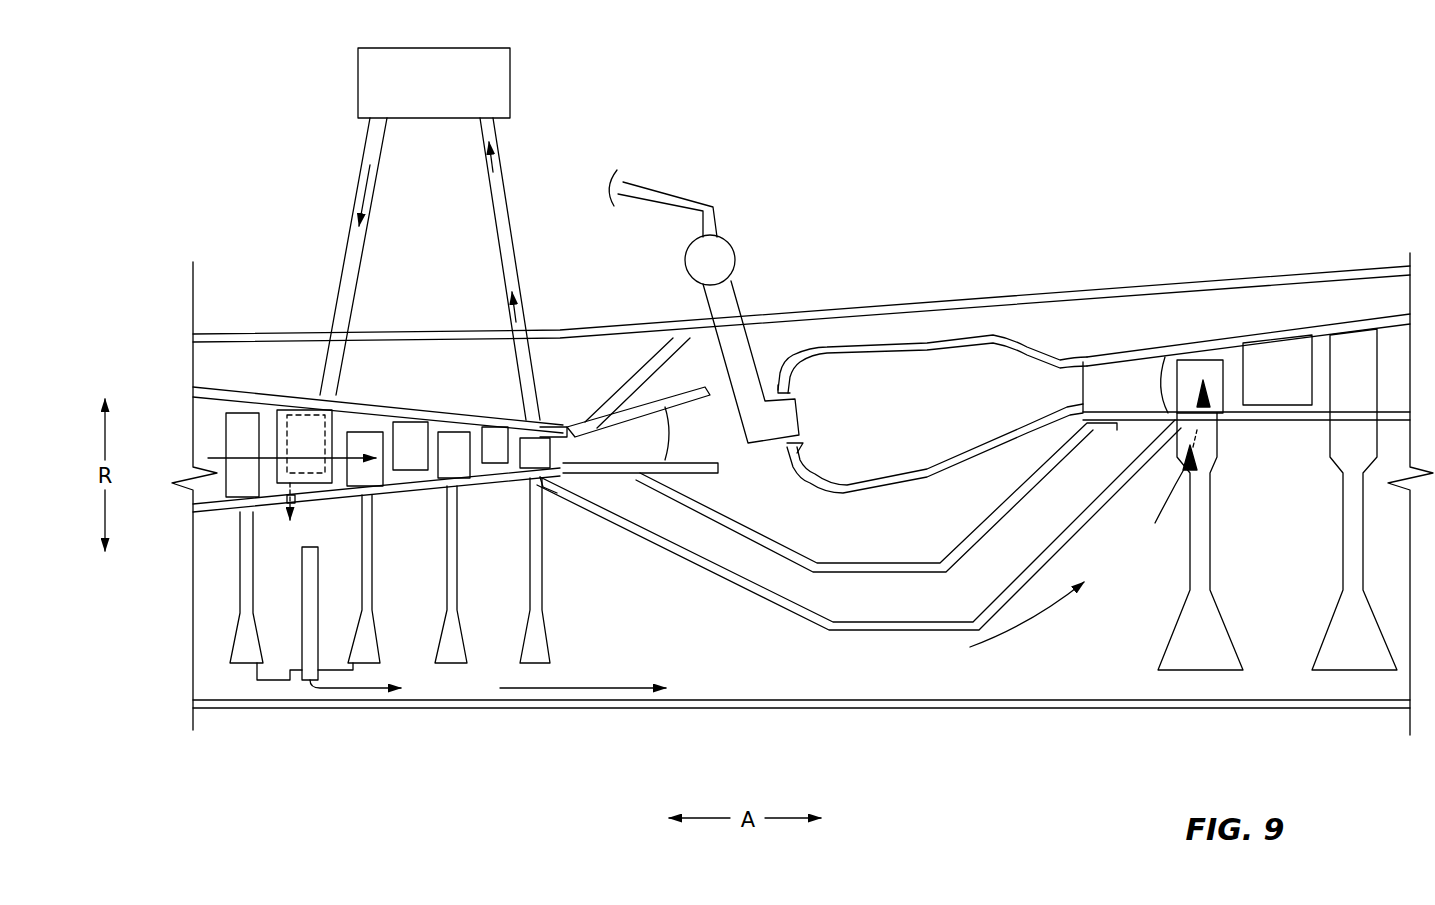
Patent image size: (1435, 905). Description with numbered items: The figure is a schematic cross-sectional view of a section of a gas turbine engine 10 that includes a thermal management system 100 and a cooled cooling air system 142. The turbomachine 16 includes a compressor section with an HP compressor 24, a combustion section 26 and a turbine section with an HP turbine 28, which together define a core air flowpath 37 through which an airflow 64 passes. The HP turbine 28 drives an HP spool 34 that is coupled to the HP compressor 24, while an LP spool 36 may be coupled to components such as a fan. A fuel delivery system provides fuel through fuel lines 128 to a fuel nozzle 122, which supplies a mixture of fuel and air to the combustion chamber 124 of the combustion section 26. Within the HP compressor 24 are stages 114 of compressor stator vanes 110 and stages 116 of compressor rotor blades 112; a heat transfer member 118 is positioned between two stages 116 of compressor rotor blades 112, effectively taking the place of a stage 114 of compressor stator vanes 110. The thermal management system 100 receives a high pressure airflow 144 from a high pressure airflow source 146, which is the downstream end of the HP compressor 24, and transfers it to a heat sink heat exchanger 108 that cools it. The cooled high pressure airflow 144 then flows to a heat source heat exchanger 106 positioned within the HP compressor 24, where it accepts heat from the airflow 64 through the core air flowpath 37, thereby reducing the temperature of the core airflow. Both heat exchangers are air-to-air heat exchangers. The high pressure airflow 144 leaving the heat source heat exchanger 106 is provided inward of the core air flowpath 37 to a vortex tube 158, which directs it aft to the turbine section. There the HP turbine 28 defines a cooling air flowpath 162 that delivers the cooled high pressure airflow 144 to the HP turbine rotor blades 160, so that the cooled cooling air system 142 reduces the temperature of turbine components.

The thermal management system 100 is at (268, 156).
The gas turbine engine 10 is at (1124, 154).
The turbomachine 16 is at (1410, 494).
The LP spool 36 is at (1033, 710).
The combustion section 26 is at (1013, 322).
The HP turbine 28 is at (1289, 308).
The stage of compressor stator vanes 114 is at (401, 400).
The compressor rotor blade 112 is at (248, 405).
The core air flowpath 37 is at (210, 433).
The stage of compressor rotor blades 116 is at (235, 423).
The heat transfer member 118 is at (270, 423).
The heat source heat exchanger 106 is at (320, 481).
The compressor stator vane 110 is at (409, 443).
The HP compressor 24 is at (366, 382).
The airflow 64 is at (247, 462).
The vortex tube 158 is at (306, 597).
The high pressure airflow source 146 is at (551, 420).
The heat sink heat exchanger 108 is at (357, 92).
The high pressure airflow 144 is at (343, 303).
The cooled cooling air system 142 is at (580, 100).
The fuel line 128 is at (673, 190).
The fuel nozzle 122 is at (748, 336).
The combustion chamber 124 is at (908, 413).
The HP spool 34 is at (1100, 527).
The HP turbine rotor blade 160 is at (1198, 377).
The cooling air flowpath 162 is at (1153, 523).